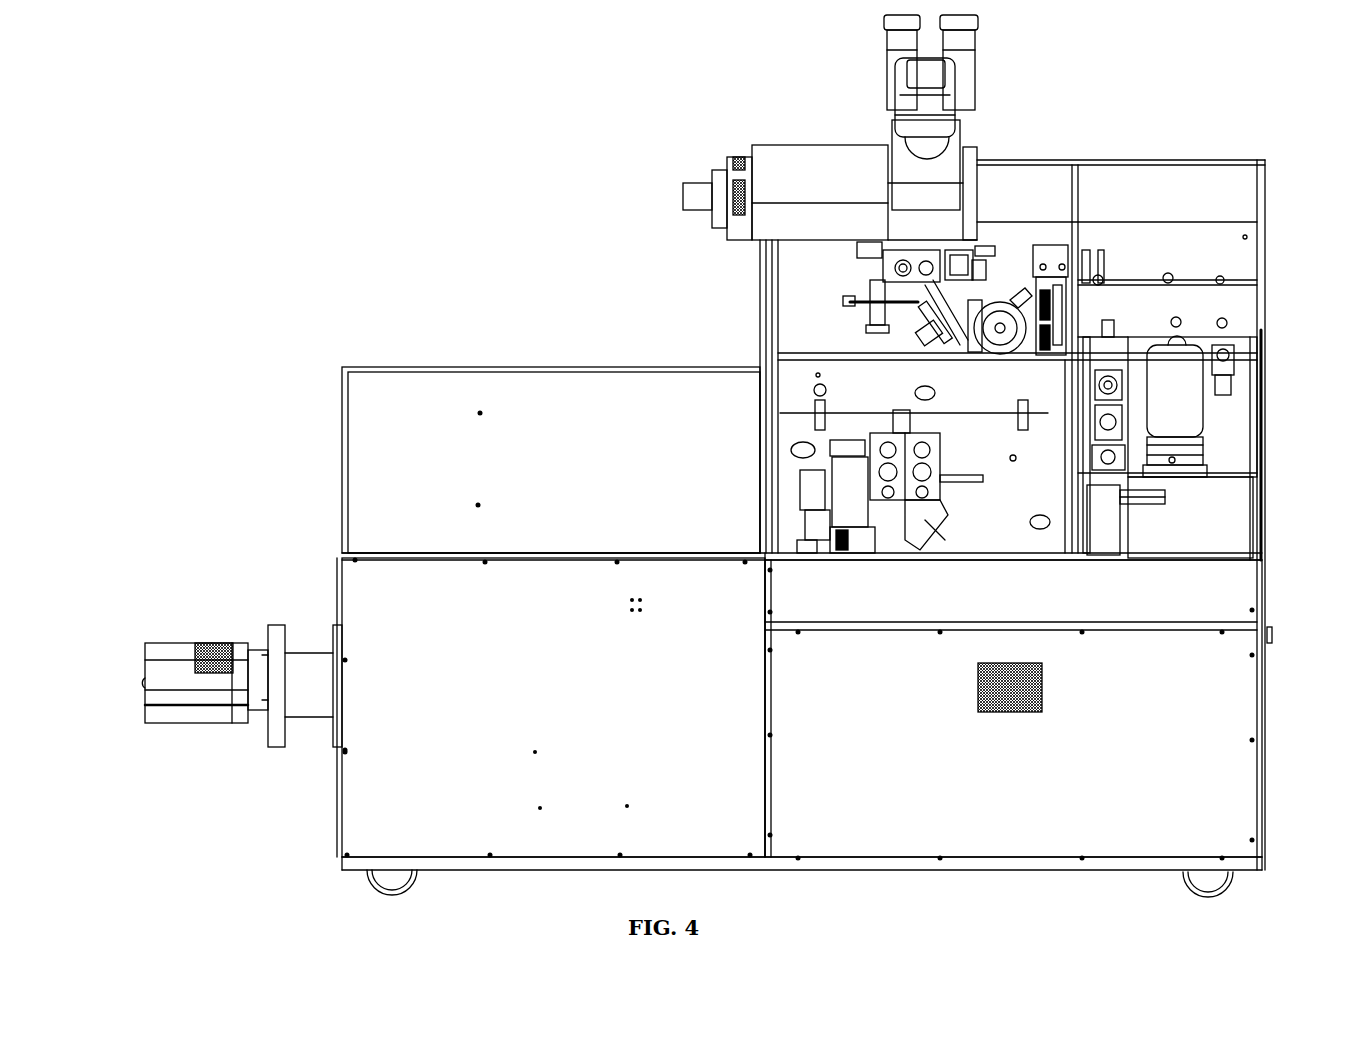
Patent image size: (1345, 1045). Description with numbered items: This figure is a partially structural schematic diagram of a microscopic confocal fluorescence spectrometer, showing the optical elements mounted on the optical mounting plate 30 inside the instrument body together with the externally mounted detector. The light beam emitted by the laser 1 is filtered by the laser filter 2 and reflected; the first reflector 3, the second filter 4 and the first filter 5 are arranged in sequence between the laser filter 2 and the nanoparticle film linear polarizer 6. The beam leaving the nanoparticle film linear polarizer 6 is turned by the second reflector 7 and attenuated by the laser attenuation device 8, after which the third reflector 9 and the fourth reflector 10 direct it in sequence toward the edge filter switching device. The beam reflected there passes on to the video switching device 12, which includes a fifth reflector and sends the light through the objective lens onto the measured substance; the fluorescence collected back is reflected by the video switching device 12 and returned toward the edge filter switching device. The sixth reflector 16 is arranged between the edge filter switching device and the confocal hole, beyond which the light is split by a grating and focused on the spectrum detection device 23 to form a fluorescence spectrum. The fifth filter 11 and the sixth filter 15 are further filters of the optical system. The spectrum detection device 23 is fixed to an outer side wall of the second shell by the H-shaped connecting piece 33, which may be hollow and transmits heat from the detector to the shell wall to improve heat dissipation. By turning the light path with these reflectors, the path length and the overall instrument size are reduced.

The laser 1 is at (1242, 362).
The laser filter 2 is at (1223, 323).
The first reflector 3 is at (1220, 278).
The second filter 4 is at (1168, 277).
The first filter 5 is at (1103, 275).
The nanoparticle film linear polarizer 6 is at (1052, 265).
The second reflector 7 is at (1000, 275).
The laser attenuation device 8 is at (1062, 352).
The third reflector 9 is at (1067, 383).
The fourth reflector 10 is at (875, 285).
The fifth filter 11 is at (898, 412).
The video switching device 12 is at (925, 272).
The sixth filter 15 is at (830, 450).
The sixth reflector 16 is at (943, 523).
The spectrum detection device 23 is at (212, 645).
The optical mounting plate 30 is at (1027, 485).
The connecting piece 33 is at (322, 683).